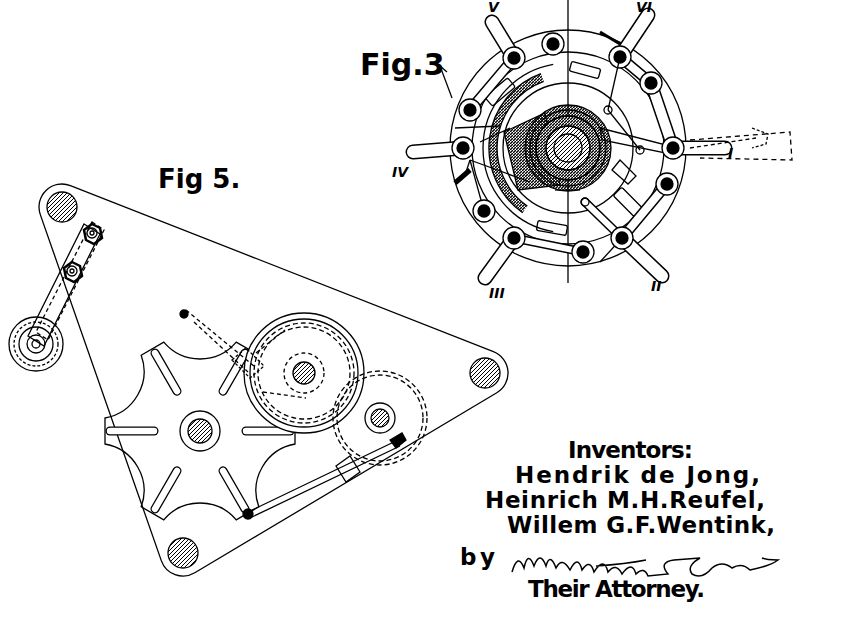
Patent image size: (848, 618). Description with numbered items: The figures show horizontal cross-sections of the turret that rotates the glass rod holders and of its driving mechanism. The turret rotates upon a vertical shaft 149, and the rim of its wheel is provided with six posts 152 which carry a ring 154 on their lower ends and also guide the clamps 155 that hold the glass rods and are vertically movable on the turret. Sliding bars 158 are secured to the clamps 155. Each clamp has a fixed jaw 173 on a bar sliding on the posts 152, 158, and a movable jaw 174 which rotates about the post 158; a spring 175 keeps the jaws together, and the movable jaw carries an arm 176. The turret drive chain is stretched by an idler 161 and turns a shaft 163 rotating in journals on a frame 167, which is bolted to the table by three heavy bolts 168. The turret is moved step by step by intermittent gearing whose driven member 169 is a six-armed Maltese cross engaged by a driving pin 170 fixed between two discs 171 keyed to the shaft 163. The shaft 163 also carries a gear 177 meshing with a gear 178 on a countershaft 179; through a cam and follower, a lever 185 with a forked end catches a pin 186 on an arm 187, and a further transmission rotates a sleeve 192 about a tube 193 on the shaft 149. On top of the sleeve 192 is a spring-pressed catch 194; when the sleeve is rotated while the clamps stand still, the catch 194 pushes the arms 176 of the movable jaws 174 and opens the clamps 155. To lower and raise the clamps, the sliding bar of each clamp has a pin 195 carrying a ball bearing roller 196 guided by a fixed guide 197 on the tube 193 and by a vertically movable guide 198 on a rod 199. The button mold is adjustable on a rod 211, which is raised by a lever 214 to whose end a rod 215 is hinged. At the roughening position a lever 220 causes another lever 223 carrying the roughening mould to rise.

In FIG. 3, the vertical shaft 149 is at (601, 212).
In FIG. 5, the vertical shaft 149 is at (212, 440).
In FIG. 3, the posts 152 is at (458, 111).
In FIG. 3, the ring 154 is at (668, 86).
In FIG. 3, the clamps 155 is at (630, 252).
In FIG. 3, the sliding bars 158 is at (638, 56).
In FIG. 5, the idler 161 is at (47, 368).
In FIG. 5, the shaft 163 is at (308, 385).
In FIG. 5, the frame 167 is at (270, 280).
In FIG. 5, the heavy bolts 168 is at (65, 195).
In FIG. 5, the driven member 169 is at (204, 500).
In FIG. 5, the driving pin 170 is at (258, 344).
In FIG. 5, the discs 171 is at (296, 318).
In FIG. 3, the fixed jaw 173 is at (644, 33).
In FIG. 3, the movable jaw 174 is at (624, 33).
In FIG. 3, the spring 175 is at (497, 58).
In FIG. 3, the arm 176 is at (612, 90).
In FIG. 5, the gear 177 is at (350, 358).
In FIG. 5, the gear 178 is at (404, 454).
In FIG. 5, the countershaft 179 is at (394, 418).
In FIG. 3, the lever 185 is at (776, 138).
In FIG. 3, the pin 186 is at (760, 128).
In FIG. 3, the arm 187 is at (716, 128).
In FIG. 3, the sleeve 192 is at (626, 173).
In FIG. 3, the tube 193 is at (558, 195).
In FIG. 3, the catch 194 is at (627, 131).
In FIG. 3, the pin 195 is at (457, 184).
In FIG. 3, the ball bearing roller 196 is at (612, 110).
In FIG. 3, the fixed guide 197 is at (458, 128).
In FIG. 3, the vertically movable guide 198 is at (528, 141).
In FIG. 3, the rod 199 is at (495, 137).
In FIG. 5, the rod 211 is at (248, 518).
In FIG. 5, the lever 214 is at (296, 490).
In FIG. 5, the rod 215 is at (390, 470).
In FIG. 5, the lever 220 is at (196, 328).
In FIG. 5, the lever 223 is at (186, 311).